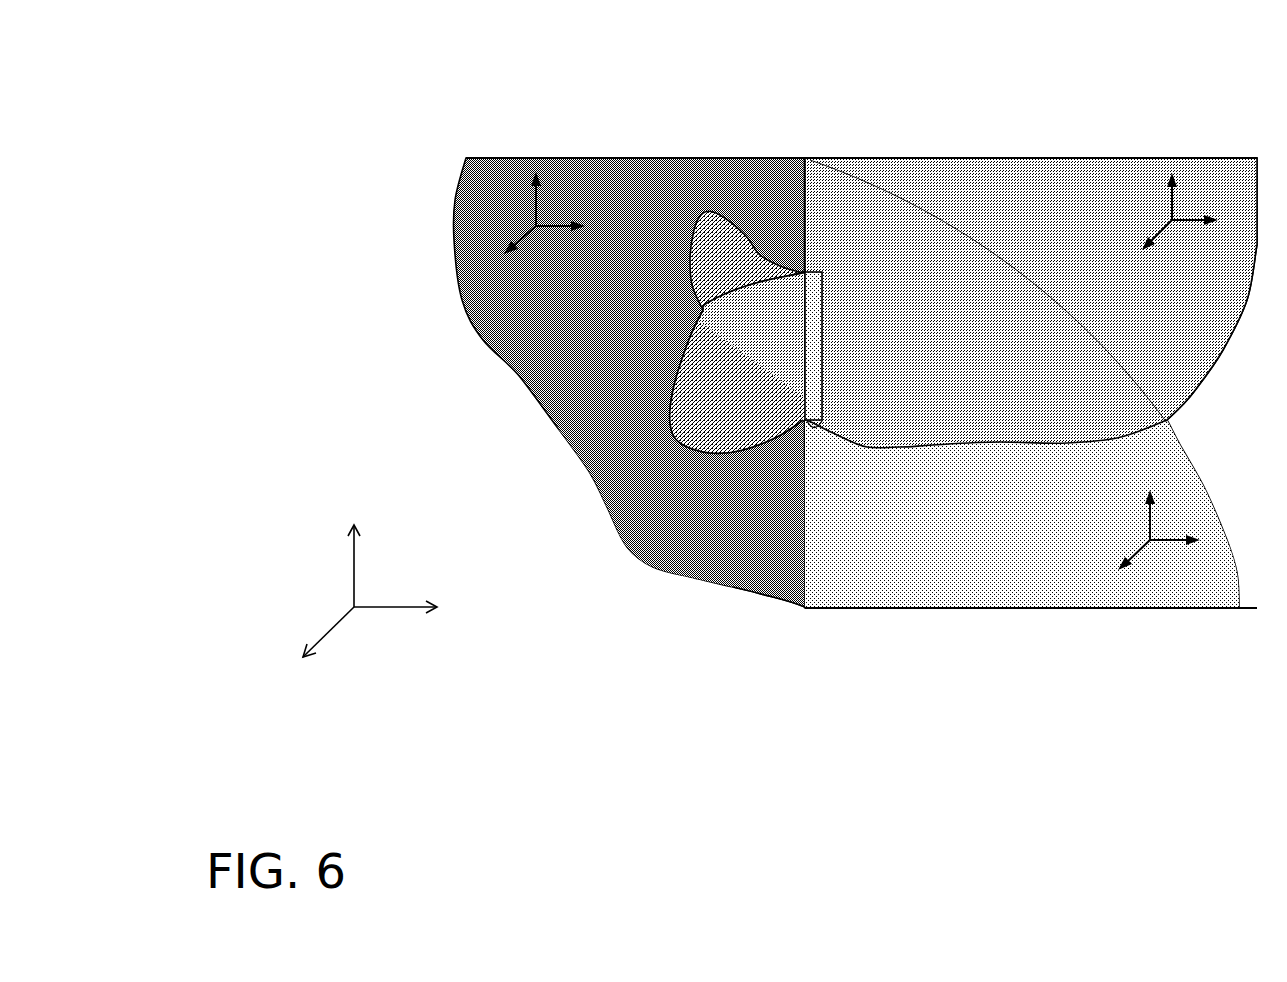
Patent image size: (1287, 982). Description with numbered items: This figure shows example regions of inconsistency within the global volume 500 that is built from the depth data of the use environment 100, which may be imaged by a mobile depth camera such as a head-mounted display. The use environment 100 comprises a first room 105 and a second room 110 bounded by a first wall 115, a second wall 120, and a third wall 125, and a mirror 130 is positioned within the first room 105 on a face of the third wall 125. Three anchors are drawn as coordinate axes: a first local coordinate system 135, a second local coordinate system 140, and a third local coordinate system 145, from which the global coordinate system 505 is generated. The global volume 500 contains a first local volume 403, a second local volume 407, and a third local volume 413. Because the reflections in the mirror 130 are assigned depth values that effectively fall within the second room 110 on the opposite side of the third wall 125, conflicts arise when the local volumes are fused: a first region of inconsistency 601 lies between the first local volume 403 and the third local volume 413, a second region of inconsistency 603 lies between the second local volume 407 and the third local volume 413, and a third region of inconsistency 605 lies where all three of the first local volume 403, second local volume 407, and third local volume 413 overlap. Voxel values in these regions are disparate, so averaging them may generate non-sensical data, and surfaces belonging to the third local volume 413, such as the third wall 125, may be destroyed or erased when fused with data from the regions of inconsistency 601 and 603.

The use environment 100 is at (479, 83).
The first room 105 is at (1195, 432).
The second room 110 is at (499, 452).
The first wall 115 is at (880, 158).
The second wall 120 is at (1068, 610).
The third wall 125 is at (802, 594).
The mirror 130 is at (827, 337).
The first local coordinate system 135 is at (1137, 527).
The second local coordinate system 140 is at (1155, 215).
The third local coordinate system 145 is at (540, 240).
The first local volume 403 is at (875, 547).
The second local volume 407 is at (1139, 342).
The third local volume 413 is at (687, 544).
The global volume 500 is at (1070, 148).
The global coordinate system 505 is at (333, 598).
The first region of inconsistency 601 is at (699, 274).
The second region of inconsistency 603 is at (706, 414).
The third region of inconsistency 605 is at (744, 339).